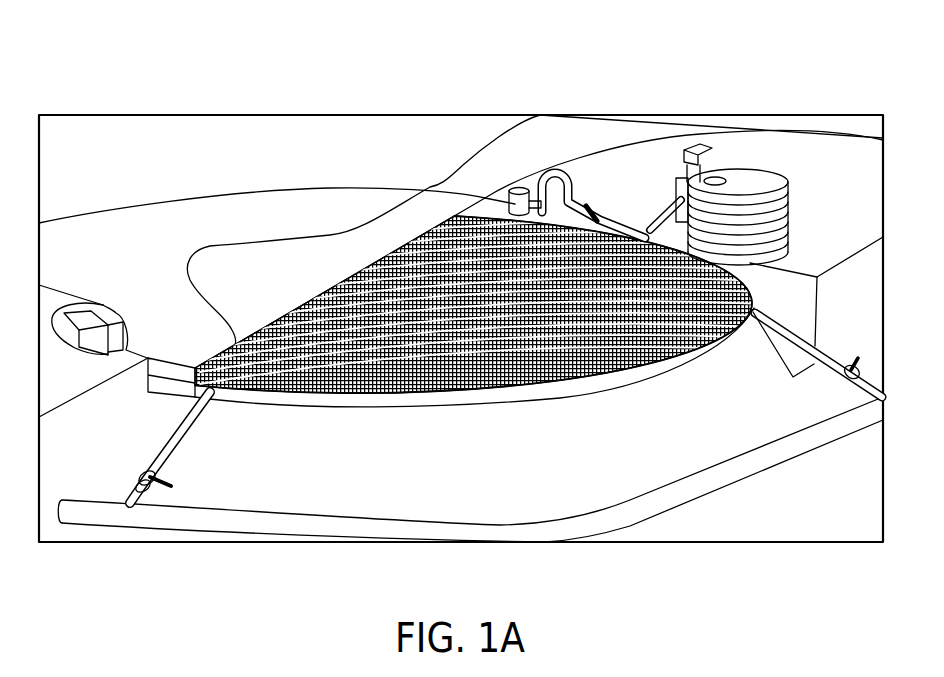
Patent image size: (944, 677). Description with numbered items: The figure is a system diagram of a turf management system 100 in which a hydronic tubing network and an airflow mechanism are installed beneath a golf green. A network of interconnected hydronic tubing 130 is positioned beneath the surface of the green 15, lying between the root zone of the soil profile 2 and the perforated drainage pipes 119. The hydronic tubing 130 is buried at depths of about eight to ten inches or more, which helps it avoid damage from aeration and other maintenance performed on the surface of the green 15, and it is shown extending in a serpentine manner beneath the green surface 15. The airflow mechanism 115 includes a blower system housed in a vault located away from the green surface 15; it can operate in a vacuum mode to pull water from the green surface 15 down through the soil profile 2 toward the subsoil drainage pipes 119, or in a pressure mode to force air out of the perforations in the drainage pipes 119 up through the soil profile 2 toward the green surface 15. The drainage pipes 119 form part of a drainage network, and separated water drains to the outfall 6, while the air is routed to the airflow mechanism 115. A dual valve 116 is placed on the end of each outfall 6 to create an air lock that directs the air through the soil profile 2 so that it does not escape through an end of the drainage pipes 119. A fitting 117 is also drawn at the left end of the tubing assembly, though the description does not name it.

The turf management system 100 is at (757, 99).
The green 15 is at (148, 212).
The soil profile 2 is at (266, 297).
The hydronic tubing 130 is at (500, 382).
The outfall 6 is at (770, 445).
The pipe fitting 117 is at (93, 321).
The drainage pipes 119 is at (180, 435).
The dual valve 116 is at (143, 470).
The airflow mechanism 115 is at (783, 180).